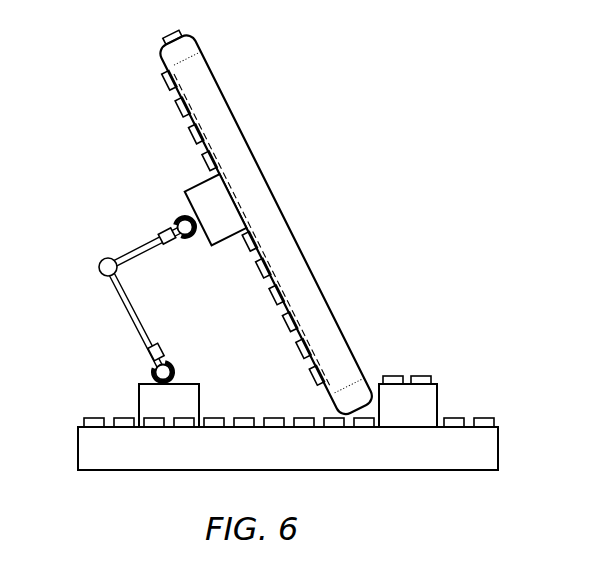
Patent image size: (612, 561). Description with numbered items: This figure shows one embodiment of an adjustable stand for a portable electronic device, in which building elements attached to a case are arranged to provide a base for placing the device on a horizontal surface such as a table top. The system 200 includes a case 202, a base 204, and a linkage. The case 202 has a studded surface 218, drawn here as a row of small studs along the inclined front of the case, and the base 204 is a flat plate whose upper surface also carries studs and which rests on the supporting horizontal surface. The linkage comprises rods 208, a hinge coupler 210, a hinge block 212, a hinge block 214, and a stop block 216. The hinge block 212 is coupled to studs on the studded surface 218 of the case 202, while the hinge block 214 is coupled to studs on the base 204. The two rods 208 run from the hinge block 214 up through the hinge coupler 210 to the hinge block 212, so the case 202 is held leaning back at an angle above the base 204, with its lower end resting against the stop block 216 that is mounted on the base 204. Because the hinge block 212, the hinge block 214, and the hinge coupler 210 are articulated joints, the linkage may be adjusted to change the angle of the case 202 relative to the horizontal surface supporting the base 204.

The system 200 is at (280, 242).
The case 202 is at (289, 231).
The base 204 is at (486, 462).
The rods 208 is at (129, 313).
The hinge coupler 210 is at (106, 259).
The hinge block 212 is at (190, 194).
The hinge block 214 is at (140, 392).
The stop block 216 is at (432, 398).
The studded surface 218 is at (168, 112).